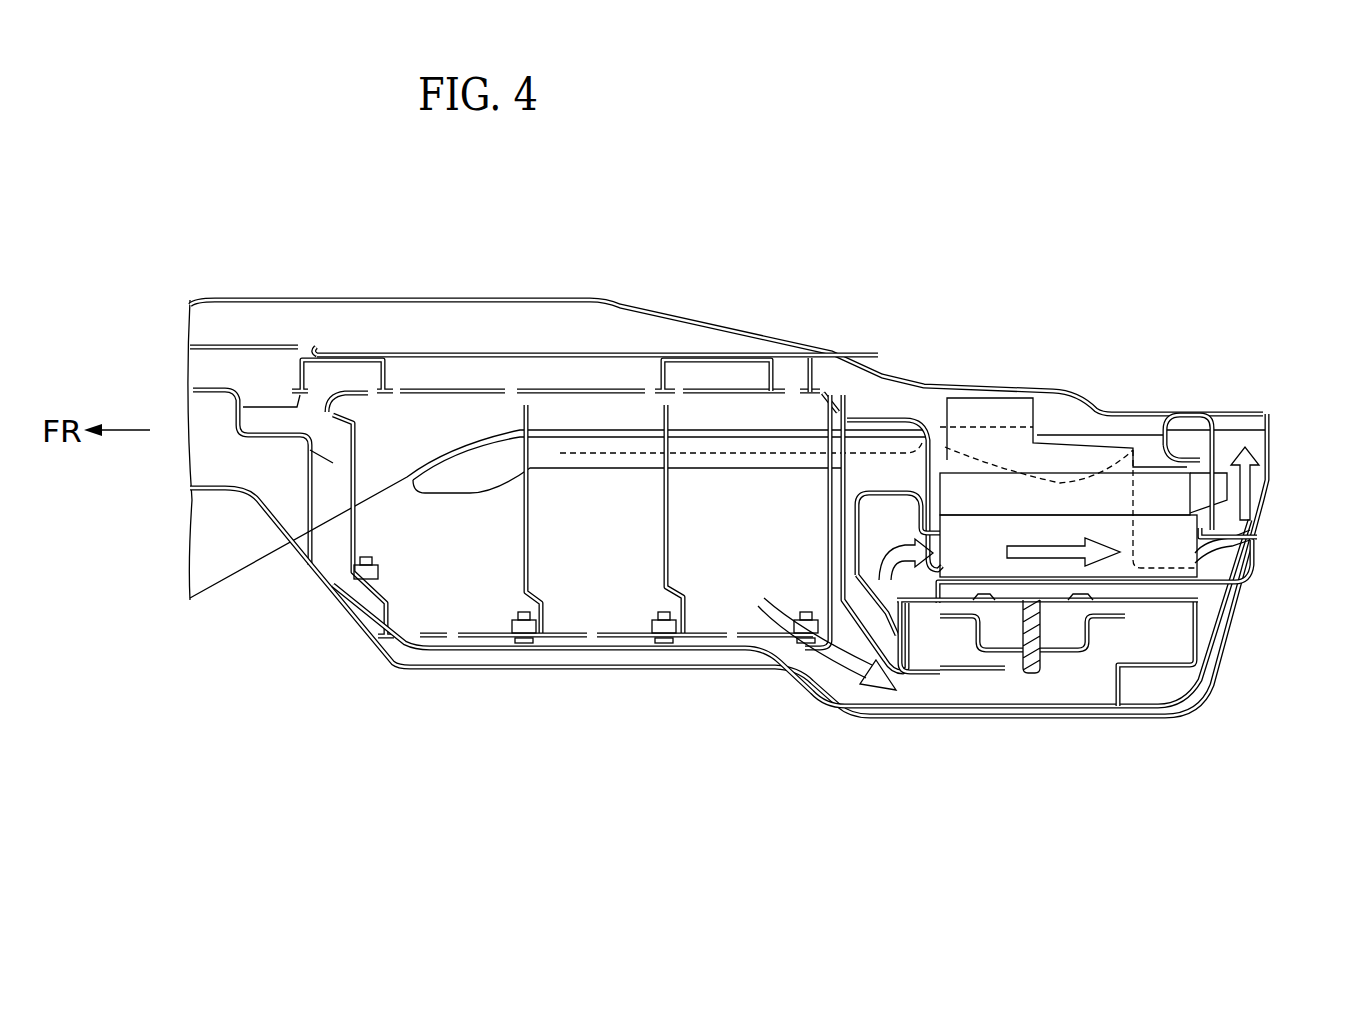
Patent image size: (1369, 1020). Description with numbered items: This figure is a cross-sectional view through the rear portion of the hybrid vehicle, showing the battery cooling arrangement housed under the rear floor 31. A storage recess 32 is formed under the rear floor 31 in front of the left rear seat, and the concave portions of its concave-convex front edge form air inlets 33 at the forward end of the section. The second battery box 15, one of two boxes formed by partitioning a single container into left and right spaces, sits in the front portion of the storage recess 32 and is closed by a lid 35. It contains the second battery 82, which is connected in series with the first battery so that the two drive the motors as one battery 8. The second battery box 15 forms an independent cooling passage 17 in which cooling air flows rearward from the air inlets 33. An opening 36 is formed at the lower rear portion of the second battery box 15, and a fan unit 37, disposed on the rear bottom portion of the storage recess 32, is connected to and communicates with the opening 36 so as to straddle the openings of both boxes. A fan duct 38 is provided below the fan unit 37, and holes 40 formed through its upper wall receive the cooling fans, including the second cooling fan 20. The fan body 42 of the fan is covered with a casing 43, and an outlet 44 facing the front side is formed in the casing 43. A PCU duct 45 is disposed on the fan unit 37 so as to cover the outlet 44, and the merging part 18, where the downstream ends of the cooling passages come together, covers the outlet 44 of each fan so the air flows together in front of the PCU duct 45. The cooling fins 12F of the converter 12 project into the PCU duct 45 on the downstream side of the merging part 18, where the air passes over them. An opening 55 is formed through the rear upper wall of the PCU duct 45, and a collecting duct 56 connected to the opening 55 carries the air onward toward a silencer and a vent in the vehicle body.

The battery 8 is at (557, 418).
The converter 12 is at (1000, 398).
The cooling fins 12F is at (1175, 554).
The second battery box 15 is at (568, 640).
The cooling passage 17 is at (866, 696).
The merging part 18 is at (897, 517).
The second cooling fan 20 is at (1200, 626).
The rear floor 31 is at (672, 358).
The storage recess 32 is at (457, 658).
The air inlets 33 is at (262, 378).
The lids 35 is at (470, 372).
The openings 36 is at (800, 662).
The fan unit 37 is at (1130, 678).
The fan duct 38 is at (1038, 707).
The holes 40 is at (948, 673).
The fan body 42 is at (1100, 626).
The casing 43 is at (1195, 661).
The outlet 44 is at (915, 646).
The PCU duct 45 is at (855, 536).
The opening 55 is at (1230, 540).
The collecting duct 56 is at (1208, 435).
The second battery 82 is at (572, 425).